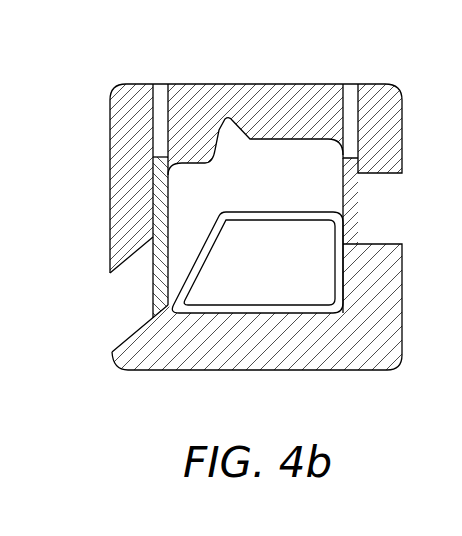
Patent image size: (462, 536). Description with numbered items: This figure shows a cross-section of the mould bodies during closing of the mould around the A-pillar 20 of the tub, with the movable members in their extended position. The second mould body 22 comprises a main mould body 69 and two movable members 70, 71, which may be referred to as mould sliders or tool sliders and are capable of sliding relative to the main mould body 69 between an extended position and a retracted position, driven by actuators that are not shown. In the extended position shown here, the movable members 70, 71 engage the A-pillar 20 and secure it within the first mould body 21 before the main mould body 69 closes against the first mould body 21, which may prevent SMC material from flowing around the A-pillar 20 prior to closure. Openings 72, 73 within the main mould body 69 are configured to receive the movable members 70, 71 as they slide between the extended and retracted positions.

The A-pillar 20 is at (262, 318).
The first mould body 21 is at (338, 362).
The second mould body 22 is at (210, 58).
The main mould body 69 is at (256, 86).
The movable member 70 is at (153, 292).
The movable member 71 is at (360, 203).
The opening 72 is at (160, 88).
The opening 73 is at (350, 88).